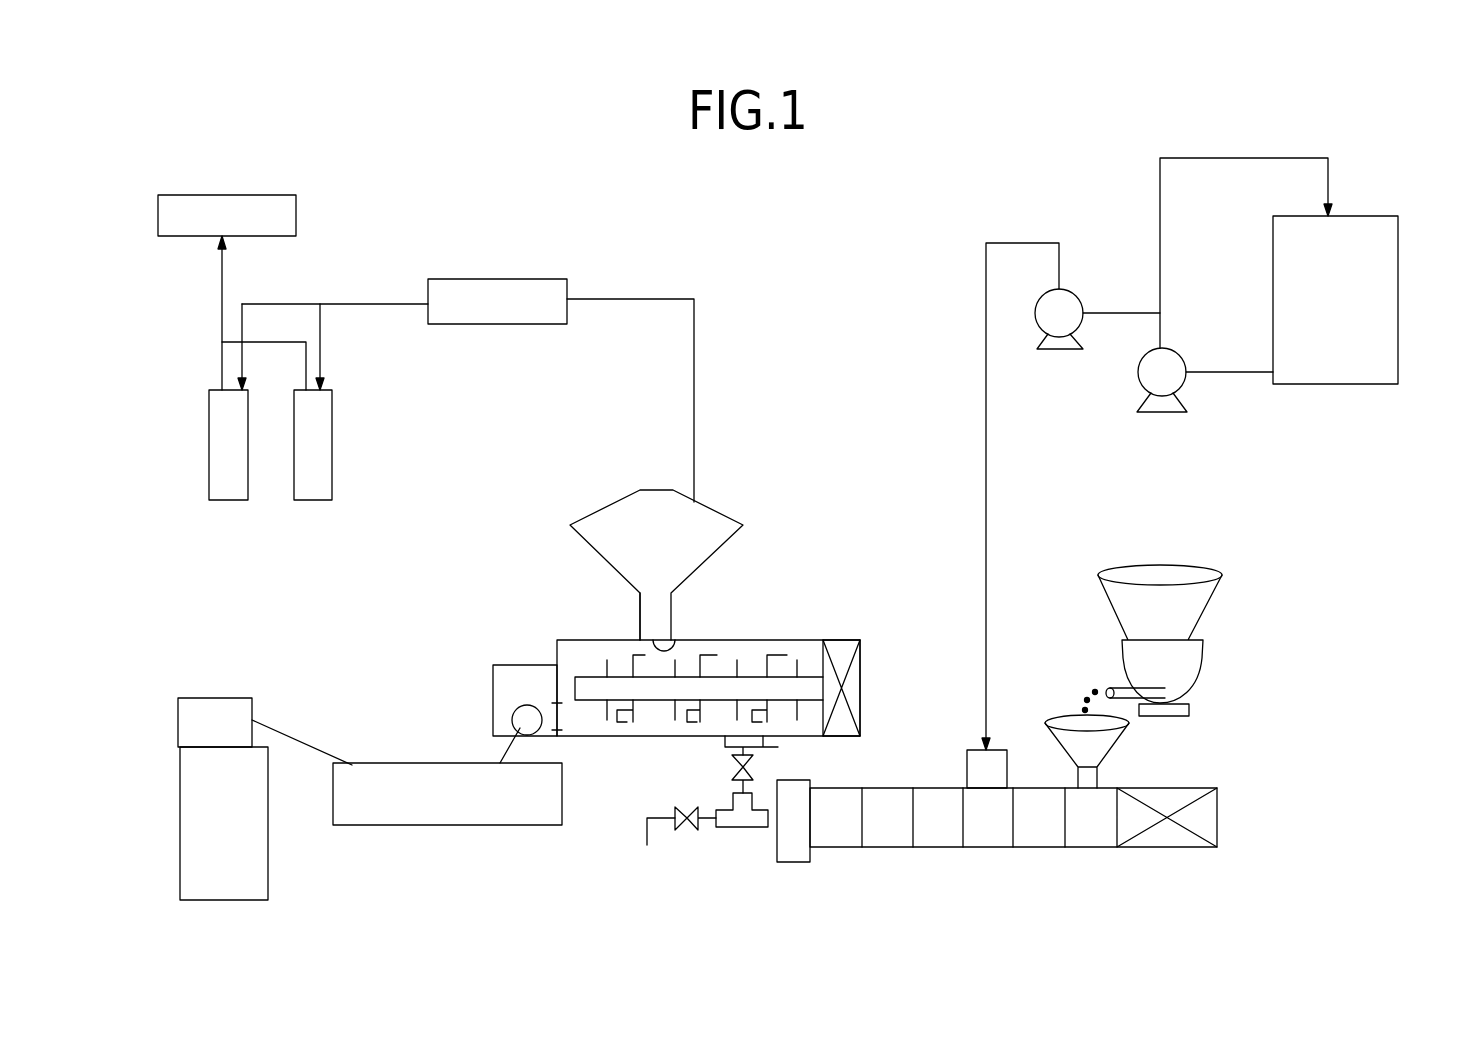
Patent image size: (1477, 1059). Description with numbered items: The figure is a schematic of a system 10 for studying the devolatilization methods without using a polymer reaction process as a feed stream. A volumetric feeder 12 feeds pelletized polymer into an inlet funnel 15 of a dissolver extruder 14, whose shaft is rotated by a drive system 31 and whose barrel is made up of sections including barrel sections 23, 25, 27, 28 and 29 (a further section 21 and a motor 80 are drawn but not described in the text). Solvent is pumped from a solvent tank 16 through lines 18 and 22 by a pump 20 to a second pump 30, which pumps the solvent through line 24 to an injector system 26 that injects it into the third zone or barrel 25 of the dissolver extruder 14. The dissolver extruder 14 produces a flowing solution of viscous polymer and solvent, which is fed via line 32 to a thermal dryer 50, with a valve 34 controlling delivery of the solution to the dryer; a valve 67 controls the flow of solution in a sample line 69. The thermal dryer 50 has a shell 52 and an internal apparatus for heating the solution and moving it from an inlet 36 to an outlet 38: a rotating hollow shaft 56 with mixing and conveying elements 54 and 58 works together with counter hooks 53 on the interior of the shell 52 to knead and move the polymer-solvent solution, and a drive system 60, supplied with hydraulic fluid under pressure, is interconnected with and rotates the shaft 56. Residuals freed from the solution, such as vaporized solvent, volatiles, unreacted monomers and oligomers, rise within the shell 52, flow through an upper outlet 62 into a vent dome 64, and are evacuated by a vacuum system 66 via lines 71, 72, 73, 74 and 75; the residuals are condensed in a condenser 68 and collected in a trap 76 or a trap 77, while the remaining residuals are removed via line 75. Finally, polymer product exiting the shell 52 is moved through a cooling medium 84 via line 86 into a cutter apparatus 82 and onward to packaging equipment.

The system 10 is at (818, 302).
The volumetric feeder 12 is at (1207, 603).
The dissolver extruder 14 is at (1163, 847).
The inlet funnel 15 is at (1113, 748).
The solvent tank 16 is at (1363, 216).
The line 18 is at (1250, 372).
The pump 20 is at (1150, 355).
The barrel zone 21 is at (1087, 840).
The line 22 is at (1130, 312).
The barrel section 23 is at (1047, 840).
The line 24 is at (985, 423).
The third zone or barrel 25 is at (1000, 832).
The injector system 26 is at (1007, 762).
The barrel section 27 is at (932, 840).
The barrel section 28 is at (878, 840).
The barrel section 29 is at (828, 838).
The pump 30 is at (1077, 293).
The drive system 31 is at (1188, 788).
The line 32 is at (733, 793).
The valve 34 is at (750, 763).
The inlet 36 is at (730, 752).
The outlet 38 is at (557, 713).
The thermal dryer 50 is at (627, 640).
The shell 52 is at (557, 657).
The counter hooks 53 is at (683, 738).
The mixing and conveying elements 54 is at (737, 660).
The rotating hollow shaft 56 is at (588, 677).
The mixing and conveying elements 58 is at (778, 655).
The drive system 60 is at (860, 685).
The upper outlet 62 is at (677, 645).
The vent dome 64 is at (720, 512).
The vacuum system 66 is at (253, 195).
The valve 67 is at (690, 830).
The condenser 68 is at (468, 279).
The sample line 69 is at (648, 833).
The line 71 is at (694, 413).
The line 72 is at (330, 304).
The line 73 is at (322, 322).
The line 74 is at (262, 340).
The line 75 is at (222, 318).
The trap 76 is at (332, 433).
The trap 77 is at (209, 473).
The motor 80 is at (493, 693).
The cutter apparatus 82 is at (240, 863).
The cooling medium 84 is at (380, 818).
The line 86 is at (500, 763).